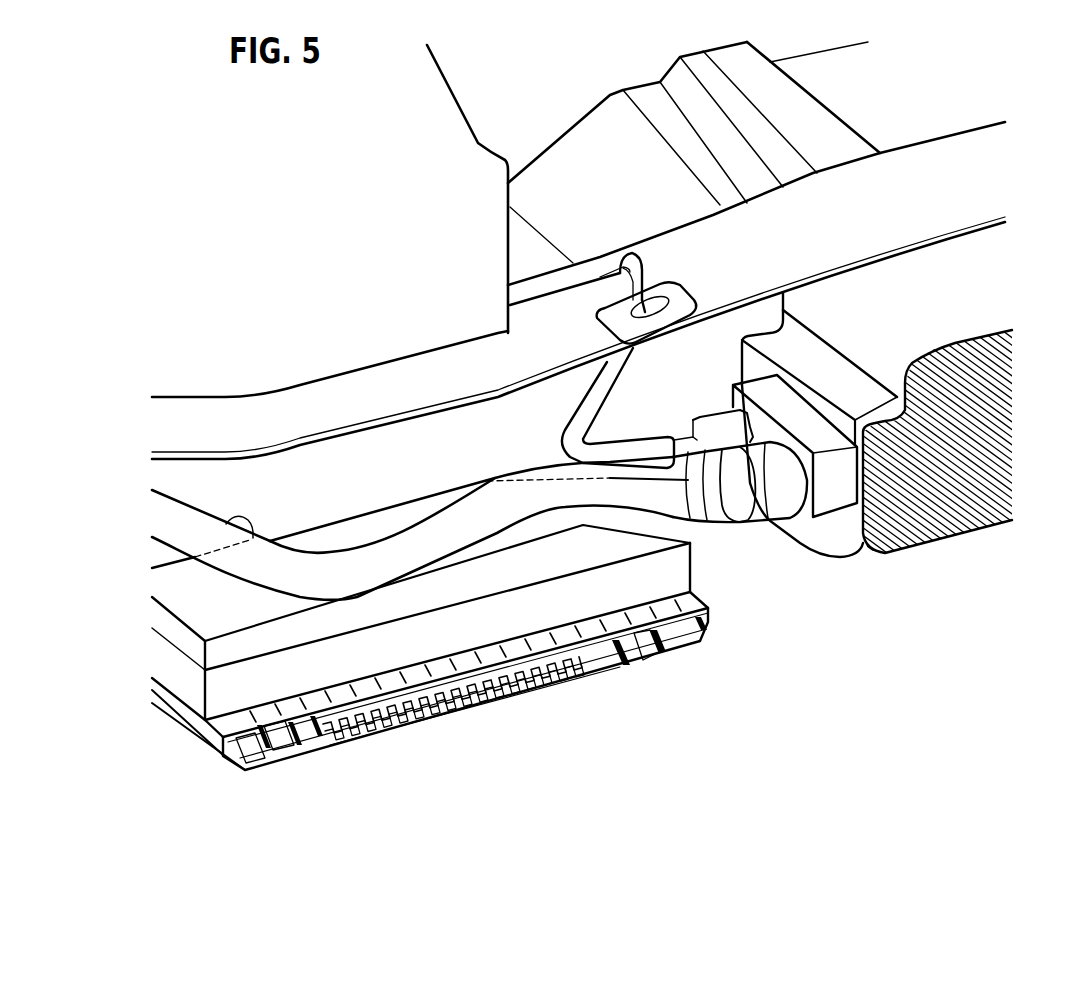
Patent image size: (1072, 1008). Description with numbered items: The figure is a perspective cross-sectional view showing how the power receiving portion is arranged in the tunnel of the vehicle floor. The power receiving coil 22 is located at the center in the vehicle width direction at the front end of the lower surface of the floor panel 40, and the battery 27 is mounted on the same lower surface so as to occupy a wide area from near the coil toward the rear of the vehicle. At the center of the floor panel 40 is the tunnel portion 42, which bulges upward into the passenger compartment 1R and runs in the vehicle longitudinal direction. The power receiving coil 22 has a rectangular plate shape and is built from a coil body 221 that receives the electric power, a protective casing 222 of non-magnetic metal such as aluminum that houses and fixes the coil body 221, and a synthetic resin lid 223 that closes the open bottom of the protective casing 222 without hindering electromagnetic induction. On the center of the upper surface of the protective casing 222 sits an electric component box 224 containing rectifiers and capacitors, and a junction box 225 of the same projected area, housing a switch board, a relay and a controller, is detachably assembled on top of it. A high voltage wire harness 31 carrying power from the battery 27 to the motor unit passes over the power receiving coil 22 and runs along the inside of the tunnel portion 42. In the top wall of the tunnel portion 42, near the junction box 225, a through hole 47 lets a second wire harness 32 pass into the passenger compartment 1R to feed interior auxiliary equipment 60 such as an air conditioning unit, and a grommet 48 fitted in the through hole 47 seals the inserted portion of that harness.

The passenger compartment 1R is at (552, 109).
The interior auxiliary equipment 60 is at (458, 103).
The floor panel 40 is at (620, 137).
The tunnel portion 42 is at (712, 233).
The wire harness 32 is at (553, 282).
The through hole 47 is at (650, 287).
The grommet 48 is at (673, 293).
The battery 27 is at (949, 552).
The wire harness 31 is at (250, 540).
The power receiving coil 22 is at (423, 736).
The coil body 221 is at (550, 687).
The protective casing 222 is at (285, 748).
The lid 223 is at (550, 687).
The electric component box 224 is at (345, 667).
The junction box 225 is at (440, 597).